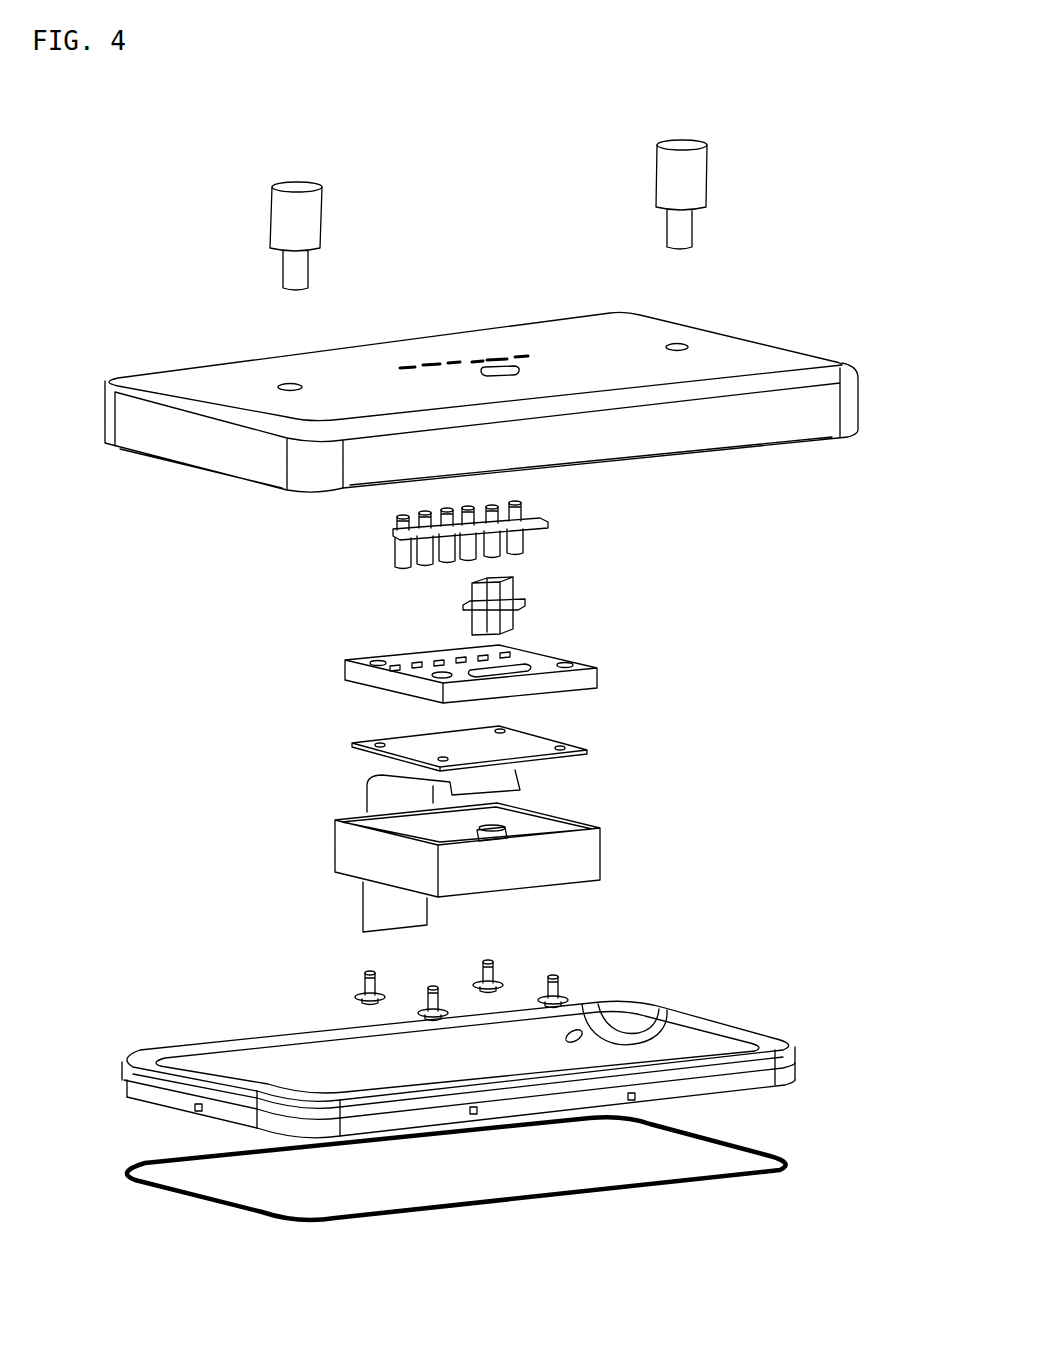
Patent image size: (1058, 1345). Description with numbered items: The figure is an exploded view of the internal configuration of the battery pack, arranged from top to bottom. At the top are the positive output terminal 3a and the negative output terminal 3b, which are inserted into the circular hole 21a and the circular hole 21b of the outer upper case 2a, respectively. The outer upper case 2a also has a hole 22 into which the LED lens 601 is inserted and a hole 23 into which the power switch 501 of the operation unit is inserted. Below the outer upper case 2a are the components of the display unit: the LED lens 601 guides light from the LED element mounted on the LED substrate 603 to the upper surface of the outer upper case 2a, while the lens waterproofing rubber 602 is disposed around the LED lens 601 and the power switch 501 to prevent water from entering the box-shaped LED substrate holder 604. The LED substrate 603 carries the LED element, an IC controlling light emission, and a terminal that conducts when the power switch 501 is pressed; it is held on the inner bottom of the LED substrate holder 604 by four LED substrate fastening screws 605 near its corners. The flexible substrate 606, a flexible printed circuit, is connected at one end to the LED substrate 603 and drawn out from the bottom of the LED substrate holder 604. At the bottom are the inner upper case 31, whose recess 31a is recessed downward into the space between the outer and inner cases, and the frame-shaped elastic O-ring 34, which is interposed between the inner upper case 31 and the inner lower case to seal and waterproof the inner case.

The positive output terminal 3a is at (297, 183).
The negative output terminal 3b is at (681, 142).
The outer upper case 2a is at (858, 410).
The circular hole 21a is at (290, 383).
The circular hole 21b is at (677, 343).
The hole 22 is at (459, 356).
The hole 23 is at (520, 371).
The LED lens 601 is at (547, 526).
The power switch 501 is at (525, 605).
The lens waterproofing rubber 602 is at (598, 680).
The LED substrate 603 is at (588, 756).
The LED substrate holder 604 is at (600, 846).
The LED substrate fastening screw 605 is at (573, 983).
The flexible substrate 606 is at (362, 911).
The inner upper case 31 is at (797, 1058).
The recess 31a is at (627, 1060).
The O-ring 34 is at (797, 1166).